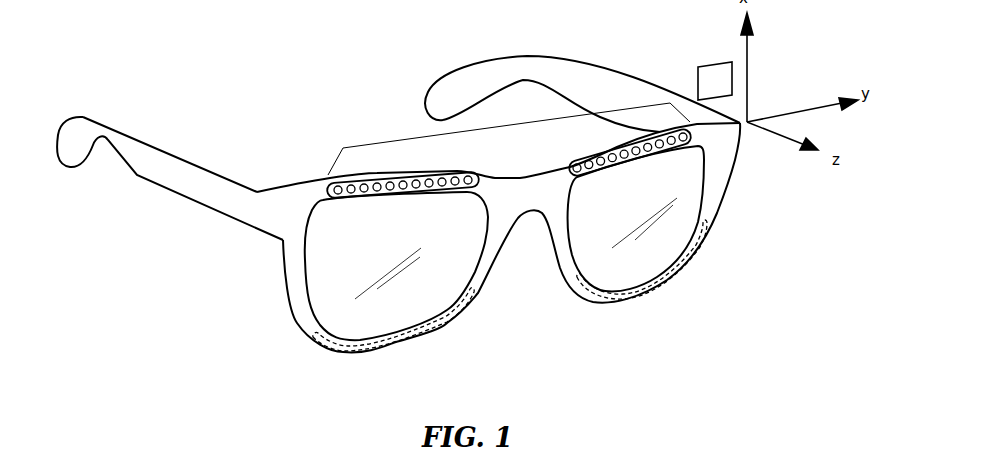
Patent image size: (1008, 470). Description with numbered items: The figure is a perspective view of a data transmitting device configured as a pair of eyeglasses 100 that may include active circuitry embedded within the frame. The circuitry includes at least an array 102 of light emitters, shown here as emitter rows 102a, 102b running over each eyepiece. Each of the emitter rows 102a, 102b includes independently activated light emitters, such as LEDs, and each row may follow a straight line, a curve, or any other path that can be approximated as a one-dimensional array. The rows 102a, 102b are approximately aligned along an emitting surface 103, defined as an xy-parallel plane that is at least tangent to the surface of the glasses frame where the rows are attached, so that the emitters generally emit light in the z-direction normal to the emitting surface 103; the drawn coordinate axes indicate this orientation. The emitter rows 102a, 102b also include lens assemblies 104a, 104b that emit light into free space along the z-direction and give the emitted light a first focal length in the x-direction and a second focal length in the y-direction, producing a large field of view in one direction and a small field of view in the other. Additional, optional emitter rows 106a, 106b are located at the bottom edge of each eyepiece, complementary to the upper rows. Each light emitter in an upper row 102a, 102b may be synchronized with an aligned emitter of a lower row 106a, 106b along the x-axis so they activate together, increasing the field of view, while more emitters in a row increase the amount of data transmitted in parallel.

The pair of eyeglasses 100 is at (199, 347).
The array of light emitters 102 is at (370, 147).
The emitter row 102a is at (437, 171).
The emitter row 102b is at (603, 150).
The emitting surface 103 is at (707, 63).
The lens assembly 104a is at (328, 187).
The lens assembly 104b is at (700, 132).
The emitter row 106a is at (360, 353).
The emitter row 106b is at (622, 304).